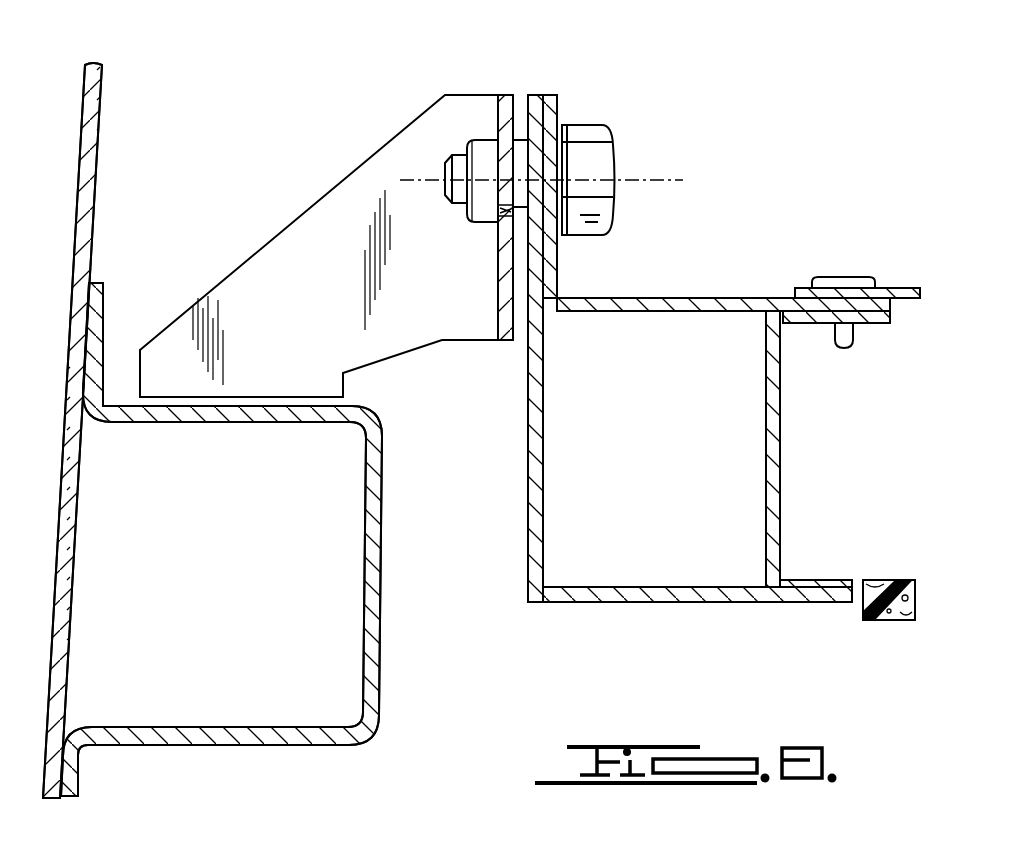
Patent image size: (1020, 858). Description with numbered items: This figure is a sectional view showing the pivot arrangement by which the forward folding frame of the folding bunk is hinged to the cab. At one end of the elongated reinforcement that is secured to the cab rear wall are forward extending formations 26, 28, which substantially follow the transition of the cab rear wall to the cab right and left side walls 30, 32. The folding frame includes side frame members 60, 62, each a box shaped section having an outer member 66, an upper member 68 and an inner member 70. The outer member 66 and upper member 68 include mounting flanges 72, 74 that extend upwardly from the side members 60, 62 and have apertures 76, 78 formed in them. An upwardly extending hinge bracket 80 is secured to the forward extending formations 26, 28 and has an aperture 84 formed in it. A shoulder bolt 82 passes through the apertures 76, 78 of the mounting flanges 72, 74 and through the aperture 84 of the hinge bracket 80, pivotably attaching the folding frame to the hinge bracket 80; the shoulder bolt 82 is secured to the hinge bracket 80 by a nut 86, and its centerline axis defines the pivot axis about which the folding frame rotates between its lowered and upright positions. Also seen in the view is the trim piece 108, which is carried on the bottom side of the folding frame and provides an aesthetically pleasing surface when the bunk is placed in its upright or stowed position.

The forward extending formation 26 is at (384, 458).
The forward extending formation 28 is at (221, 539).
The cab right side wall 30 is at (95, 101).
The cab left side wall 32 is at (72, 430).
The side frame member 60 is at (672, 326).
The side frame member 62 is at (535, 348).
The outer member 66 is at (540, 447).
The upper member 68 is at (638, 298).
The inner member 70 is at (781, 467).
The mounting flange 72 is at (527, 110).
The mounting flange 74 is at (549, 118).
The aperture 76 is at (512, 214).
The aperture 78 is at (566, 203).
The hinge bracket 80 is at (272, 236).
The shoulder bolt 82 is at (603, 140).
The aperture 84 is at (472, 218).
The nut 86 is at (479, 145).
The trim piece 108 is at (900, 580).